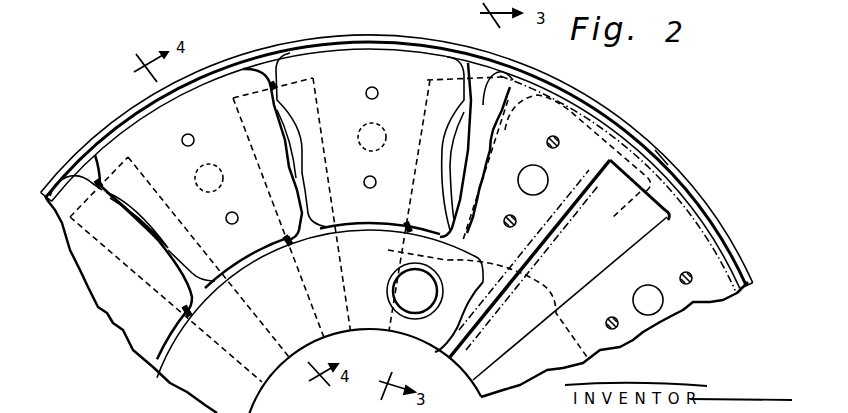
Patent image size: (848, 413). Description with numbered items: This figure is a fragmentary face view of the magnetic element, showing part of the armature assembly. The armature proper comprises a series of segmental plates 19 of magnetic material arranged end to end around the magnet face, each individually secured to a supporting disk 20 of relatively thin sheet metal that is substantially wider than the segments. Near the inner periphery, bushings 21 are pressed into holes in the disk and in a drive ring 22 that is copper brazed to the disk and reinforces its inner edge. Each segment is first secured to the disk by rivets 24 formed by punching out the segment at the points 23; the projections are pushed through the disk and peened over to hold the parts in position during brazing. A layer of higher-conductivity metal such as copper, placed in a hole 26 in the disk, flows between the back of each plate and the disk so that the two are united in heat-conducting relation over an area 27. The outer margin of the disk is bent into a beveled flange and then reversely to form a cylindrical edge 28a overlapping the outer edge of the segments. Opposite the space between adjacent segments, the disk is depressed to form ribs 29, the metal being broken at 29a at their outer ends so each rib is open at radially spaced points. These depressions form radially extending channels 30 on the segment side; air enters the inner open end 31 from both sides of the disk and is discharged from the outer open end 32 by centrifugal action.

The segmental plates 19 is at (117, 137).
The supporting disk 20 is at (580, 114).
The bushings 21 is at (387, 288).
The drive ring 22 is at (406, 330).
The punched-out portions 23 is at (181, 140).
The rivets 24 is at (553, 135).
The hole 26 is at (195, 173).
The area 27 is at (604, 150).
The cylindrical edge 28a is at (663, 158).
The ribs 29 is at (232, 100).
The broken portion of disk metal 29a is at (618, 201).
The channels 30 is at (408, 225).
The inner open end 31 is at (402, 256).
The outer open end 32 is at (82, 163).